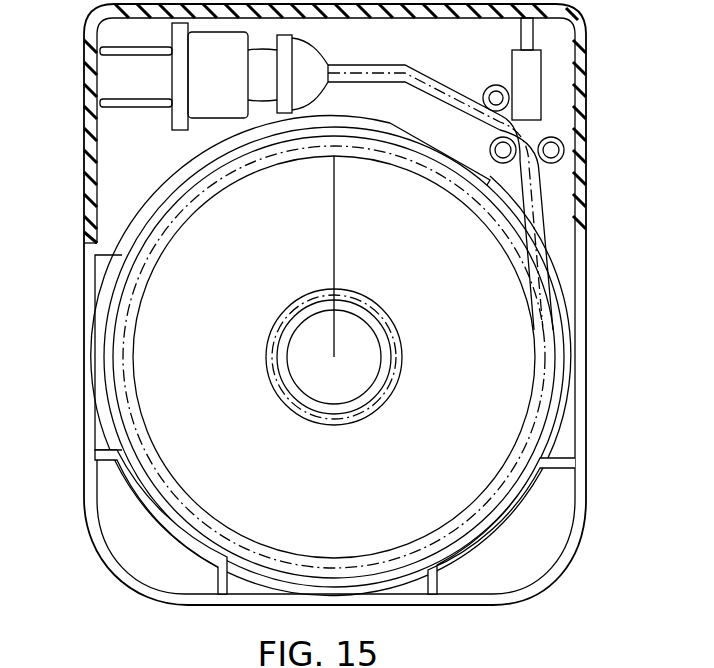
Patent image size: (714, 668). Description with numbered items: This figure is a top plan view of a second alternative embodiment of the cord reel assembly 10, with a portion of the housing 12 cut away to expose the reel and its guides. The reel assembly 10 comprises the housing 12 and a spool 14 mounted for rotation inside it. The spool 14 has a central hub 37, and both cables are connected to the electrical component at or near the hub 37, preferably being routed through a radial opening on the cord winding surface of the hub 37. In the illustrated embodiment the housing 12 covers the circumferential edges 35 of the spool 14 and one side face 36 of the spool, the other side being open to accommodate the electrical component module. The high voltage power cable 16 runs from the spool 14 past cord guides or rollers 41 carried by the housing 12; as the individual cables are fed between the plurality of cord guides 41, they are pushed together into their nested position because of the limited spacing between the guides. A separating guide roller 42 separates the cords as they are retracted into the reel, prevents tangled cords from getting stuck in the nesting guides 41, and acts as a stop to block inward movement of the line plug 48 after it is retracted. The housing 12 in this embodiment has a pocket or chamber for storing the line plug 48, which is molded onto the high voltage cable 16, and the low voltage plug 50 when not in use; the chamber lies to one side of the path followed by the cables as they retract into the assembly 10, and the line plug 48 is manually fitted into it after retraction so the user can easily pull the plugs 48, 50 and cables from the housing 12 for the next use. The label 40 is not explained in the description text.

The cord reel assembly 10 is at (588, 534).
The housing 12 is at (581, 238).
The spool 14 is at (503, 427).
The high voltage power cable 16 is at (425, 80).
The circumferential edges 35 is at (112, 283).
The side face 36 is at (152, 322).
The hub 37 is at (352, 380).
The reel flange 40 is at (507, 348).
The cord guides 41 is at (504, 161).
The separating guide roller 42 is at (485, 92).
The line plug 48 is at (216, 103).
The low voltage plug 50 is at (538, 100).